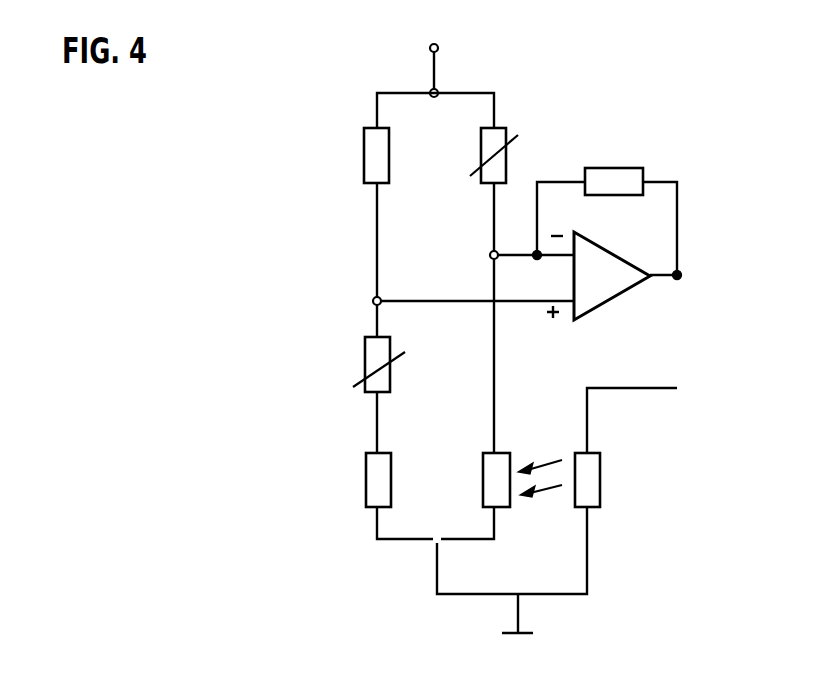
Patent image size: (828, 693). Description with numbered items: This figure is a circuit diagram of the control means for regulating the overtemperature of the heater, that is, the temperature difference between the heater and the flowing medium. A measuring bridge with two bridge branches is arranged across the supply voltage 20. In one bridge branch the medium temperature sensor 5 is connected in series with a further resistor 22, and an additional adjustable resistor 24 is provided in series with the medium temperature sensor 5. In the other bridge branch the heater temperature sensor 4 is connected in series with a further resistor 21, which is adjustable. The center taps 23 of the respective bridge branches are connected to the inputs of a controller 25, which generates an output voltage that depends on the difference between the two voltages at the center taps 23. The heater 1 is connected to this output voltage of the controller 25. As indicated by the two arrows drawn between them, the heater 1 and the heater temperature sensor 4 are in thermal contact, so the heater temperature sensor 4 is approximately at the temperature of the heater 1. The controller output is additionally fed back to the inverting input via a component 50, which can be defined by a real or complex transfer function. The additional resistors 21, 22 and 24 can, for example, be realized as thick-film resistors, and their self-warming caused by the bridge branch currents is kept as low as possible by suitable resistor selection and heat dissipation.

The heater 1 is at (600, 482).
The heater temperature sensor 4 is at (483, 482).
The medium temperature sensor 5 is at (370, 483).
The supply voltage 20 is at (438, 48).
The adjustable resistor 21 is at (506, 160).
The further resistor 22 is at (364, 155).
The center taps 23 is at (489, 255).
The adjustable resistor 24 is at (370, 360).
The controller 25 is at (616, 268).
The feedback component 50 is at (613, 170).